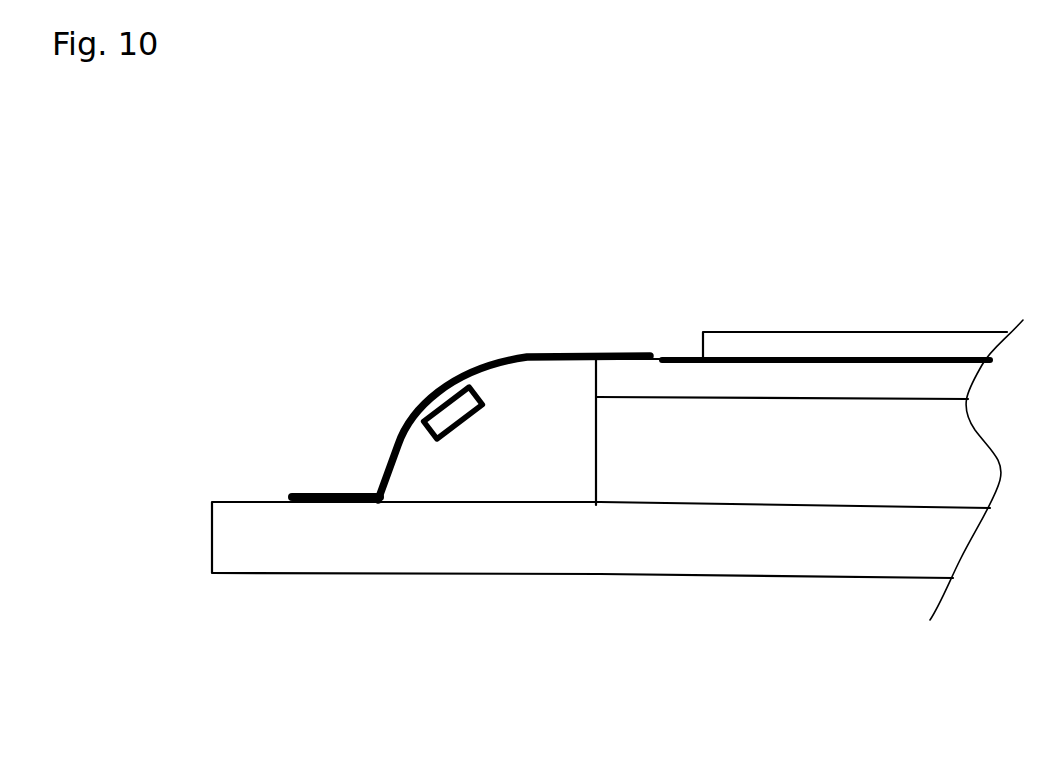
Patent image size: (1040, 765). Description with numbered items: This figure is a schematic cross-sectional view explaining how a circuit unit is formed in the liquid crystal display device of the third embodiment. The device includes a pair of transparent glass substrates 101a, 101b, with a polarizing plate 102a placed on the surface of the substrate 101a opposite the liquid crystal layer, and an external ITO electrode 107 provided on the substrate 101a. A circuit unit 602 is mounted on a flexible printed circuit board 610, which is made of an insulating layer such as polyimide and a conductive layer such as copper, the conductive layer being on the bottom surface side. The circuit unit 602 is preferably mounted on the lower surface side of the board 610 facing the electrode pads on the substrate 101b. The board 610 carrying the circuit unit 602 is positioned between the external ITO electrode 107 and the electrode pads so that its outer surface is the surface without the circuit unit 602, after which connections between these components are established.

The transparent glass substrate 101a is at (730, 485).
The transparent glass substrate 101b is at (263, 540).
The polarizing plate 102a is at (915, 345).
The external ITO electrode 107 is at (650, 373).
The circuit unit 602 is at (470, 405).
The flexible printed circuit board 610 is at (528, 354).